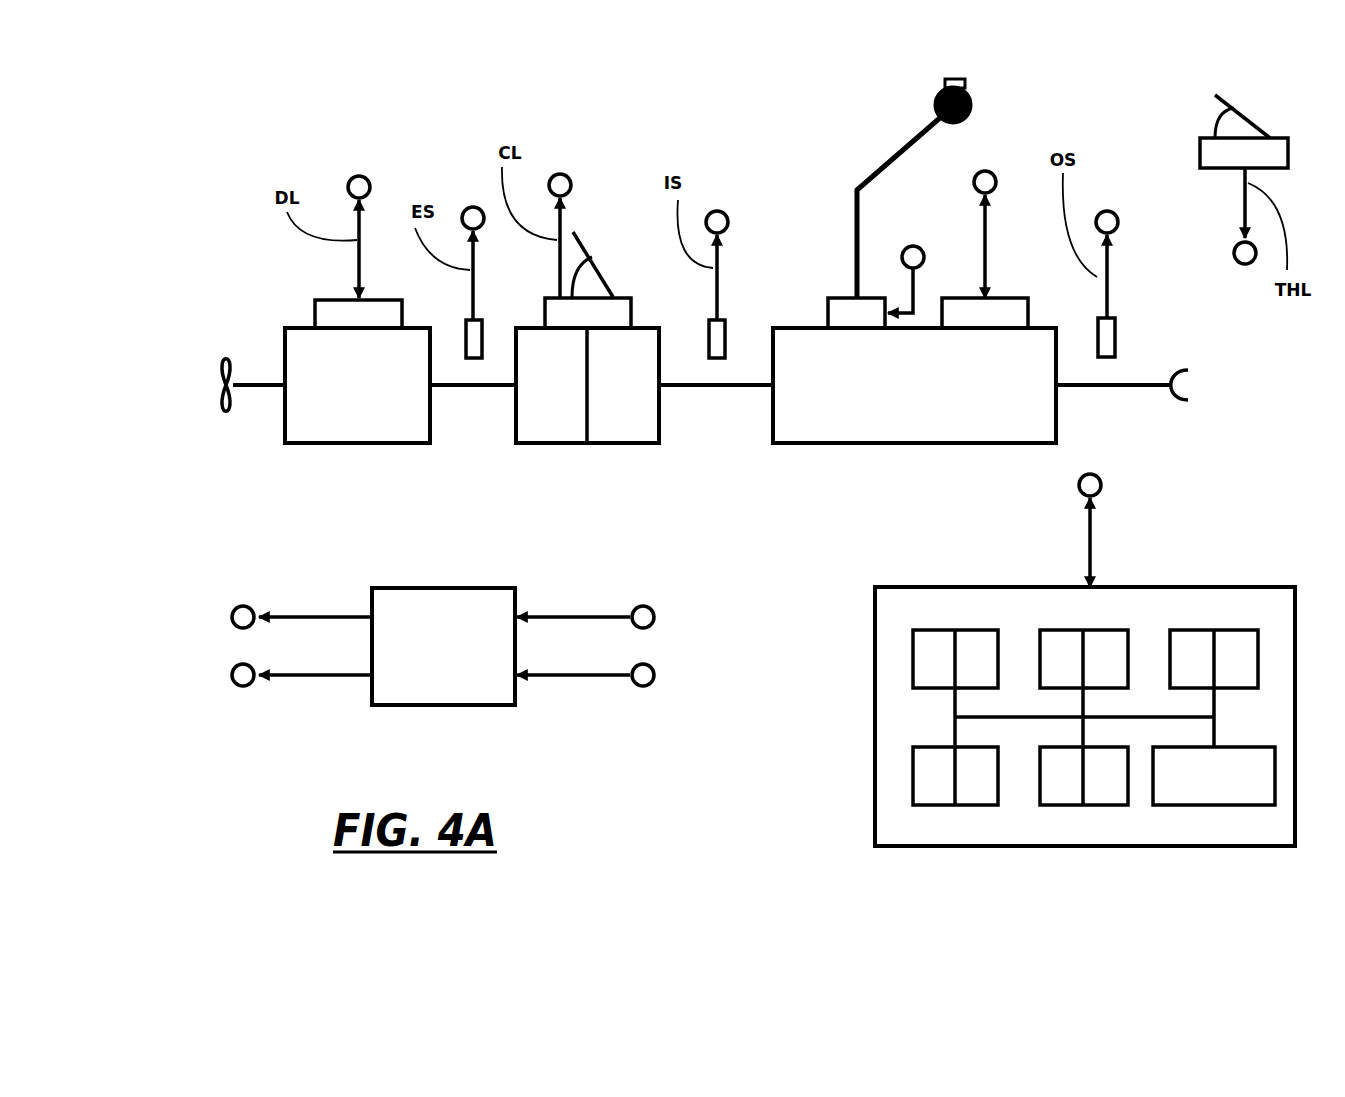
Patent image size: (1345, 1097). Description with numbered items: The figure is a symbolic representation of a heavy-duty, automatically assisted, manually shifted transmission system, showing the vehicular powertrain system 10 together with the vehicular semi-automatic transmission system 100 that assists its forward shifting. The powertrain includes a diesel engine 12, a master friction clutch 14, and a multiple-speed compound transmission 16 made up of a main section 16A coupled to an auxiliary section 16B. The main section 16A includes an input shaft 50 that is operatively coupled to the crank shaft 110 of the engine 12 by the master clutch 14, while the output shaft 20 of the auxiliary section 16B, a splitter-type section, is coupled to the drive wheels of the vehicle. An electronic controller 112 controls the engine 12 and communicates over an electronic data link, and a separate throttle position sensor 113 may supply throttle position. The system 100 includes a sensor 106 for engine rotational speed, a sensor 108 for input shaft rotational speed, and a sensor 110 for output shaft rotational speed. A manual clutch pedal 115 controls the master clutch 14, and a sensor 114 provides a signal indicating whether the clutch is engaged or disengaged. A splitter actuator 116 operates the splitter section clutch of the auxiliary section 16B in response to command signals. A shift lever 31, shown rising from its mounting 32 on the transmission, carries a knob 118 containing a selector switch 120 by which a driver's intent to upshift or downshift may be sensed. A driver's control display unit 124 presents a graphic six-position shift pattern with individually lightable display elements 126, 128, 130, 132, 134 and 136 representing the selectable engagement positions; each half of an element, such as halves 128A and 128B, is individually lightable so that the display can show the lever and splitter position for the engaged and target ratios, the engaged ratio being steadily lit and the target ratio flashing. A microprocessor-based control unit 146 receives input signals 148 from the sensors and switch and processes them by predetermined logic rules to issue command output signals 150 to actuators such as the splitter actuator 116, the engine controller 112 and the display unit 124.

The vehicular powertrain system 10 is at (767, 205).
The diesel engine 12 is at (358, 415).
The master friction clutch 14 is at (587, 462).
The multiple-speed compound transmission 16 is at (907, 407).
The main section 16A is at (843, 427).
The auxiliary section 16B is at (1013, 427).
The output shaft 20 is at (1143, 380).
The shift lever 31 is at (857, 227).
The shift lever housing 32 is at (857, 313).
The input shaft 50 is at (699, 392).
The vehicular semi-automatic transmission system 100 is at (547, 125).
The engine speed sensor 106 is at (472, 342).
The input shaft speed sensor 108 is at (748, 337).
The output shaft speed sensor 110 is at (492, 390).
The electronic controller 112 is at (343, 315).
The throttle position sensor 113 is at (1230, 153).
The clutch sensor 114 is at (615, 313).
The manual clutch pedal 115 is at (590, 257).
The splitter actuator 116 is at (1000, 313).
The knob 118 is at (972, 107).
The selector switch 120 is at (953, 80).
The driver's control display unit 124 is at (1203, 560).
The display element 126 is at (930, 632).
The display element 128 is at (932, 831).
The display element half 128A is at (932, 794).
The display element half 128B is at (972, 798).
The display element 130 is at (1106, 632).
The display element 132 is at (1075, 806).
The display element 134 is at (1237, 632).
The display element 136 is at (1213, 806).
The control unit 146 is at (428, 683).
The input signals 148 is at (572, 705).
The command output signals 150 is at (300, 692).